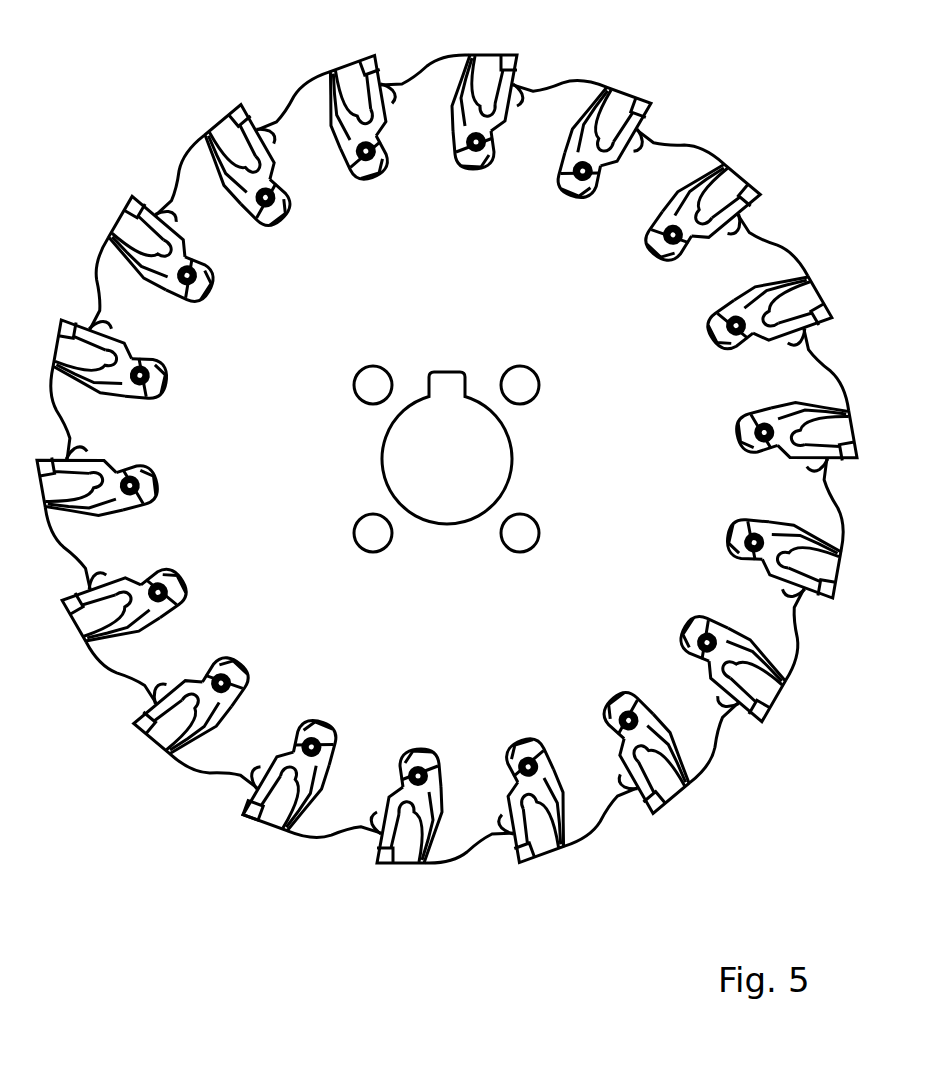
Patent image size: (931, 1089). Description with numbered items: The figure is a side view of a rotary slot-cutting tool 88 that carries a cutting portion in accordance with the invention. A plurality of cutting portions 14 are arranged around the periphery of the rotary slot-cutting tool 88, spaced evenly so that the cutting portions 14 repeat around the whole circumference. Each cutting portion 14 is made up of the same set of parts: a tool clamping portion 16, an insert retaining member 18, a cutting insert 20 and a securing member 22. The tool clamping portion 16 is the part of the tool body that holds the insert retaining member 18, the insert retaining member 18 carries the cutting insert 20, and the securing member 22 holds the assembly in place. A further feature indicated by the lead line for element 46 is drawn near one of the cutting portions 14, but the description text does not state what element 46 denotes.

The rotary slot-cutting tool 88 is at (447, 537).
The cutting portion 14 is at (306, 853).
The tool clamping portion 16 is at (212, 810).
The insert retaining member 18 is at (149, 695).
The cutting insert 20 is at (431, 847).
The securing member 22 is at (438, 776).
The chip deflector 46 is at (142, 679).